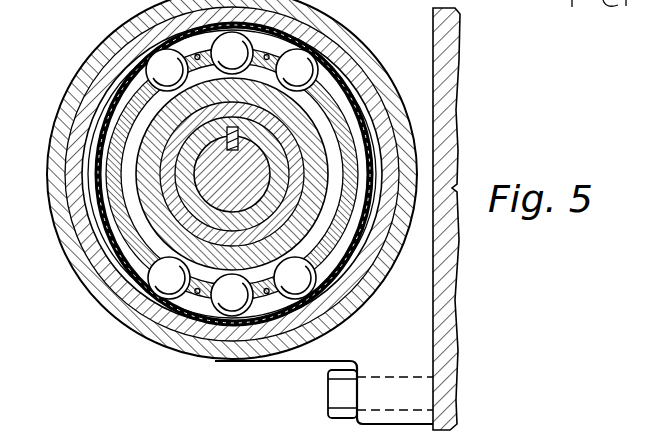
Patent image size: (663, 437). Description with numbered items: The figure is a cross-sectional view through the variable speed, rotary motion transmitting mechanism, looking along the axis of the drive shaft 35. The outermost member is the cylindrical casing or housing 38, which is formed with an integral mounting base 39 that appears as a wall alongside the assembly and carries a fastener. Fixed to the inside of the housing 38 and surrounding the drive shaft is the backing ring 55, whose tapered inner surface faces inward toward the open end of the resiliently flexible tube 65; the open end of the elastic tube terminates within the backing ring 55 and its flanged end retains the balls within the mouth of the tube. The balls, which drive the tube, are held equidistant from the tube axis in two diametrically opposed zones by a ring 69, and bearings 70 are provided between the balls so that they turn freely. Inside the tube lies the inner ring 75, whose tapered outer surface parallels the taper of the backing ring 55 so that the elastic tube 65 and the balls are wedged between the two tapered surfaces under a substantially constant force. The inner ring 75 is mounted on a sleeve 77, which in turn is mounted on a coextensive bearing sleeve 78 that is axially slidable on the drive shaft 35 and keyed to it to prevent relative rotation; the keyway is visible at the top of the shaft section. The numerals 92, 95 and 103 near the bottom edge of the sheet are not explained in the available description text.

The drive shaft 35 is at (197, 173).
The housing 38 is at (55, 125).
The mounting base 39 is at (452, 309).
The backing ring 55 is at (88, 100).
The resiliently flexible tube 65 is at (345, 78).
The ring 69 is at (353, 105).
The bearings 70 is at (177, 340).
The inner ring 75 is at (145, 197).
The sleeve 77 is at (168, 200).
The bearing sleeve 78 is at (193, 208).
The bracket 92 is at (212, 421).
The fastener 95 is at (509, 419).
The base 103 is at (622, 432).